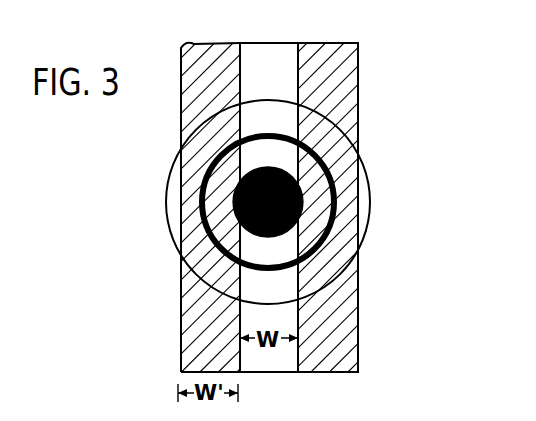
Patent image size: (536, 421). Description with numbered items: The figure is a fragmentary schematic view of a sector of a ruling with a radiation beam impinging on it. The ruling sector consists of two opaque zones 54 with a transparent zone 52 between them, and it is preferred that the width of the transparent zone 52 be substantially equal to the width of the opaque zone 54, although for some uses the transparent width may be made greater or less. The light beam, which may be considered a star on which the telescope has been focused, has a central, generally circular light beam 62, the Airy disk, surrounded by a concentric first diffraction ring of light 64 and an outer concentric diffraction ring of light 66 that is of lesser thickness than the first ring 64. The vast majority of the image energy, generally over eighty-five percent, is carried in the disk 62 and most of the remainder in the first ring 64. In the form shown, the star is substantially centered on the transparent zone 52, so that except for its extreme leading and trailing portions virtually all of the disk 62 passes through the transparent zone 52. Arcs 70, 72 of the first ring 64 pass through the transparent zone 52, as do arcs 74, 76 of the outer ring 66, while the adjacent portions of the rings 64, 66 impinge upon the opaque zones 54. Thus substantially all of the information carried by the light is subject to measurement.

The transparent zone 52 is at (283, 52).
The opaque zones 54 is at (224, 52).
The central light beam 62 is at (284, 172).
The first diffraction ring of light 64 is at (337, 203).
The outer concentric diffraction ring of light 66 is at (362, 233).
The arc 70 is at (282, 265).
The arc 72 is at (282, 135).
The arc 74 is at (278, 99).
The arc 76 is at (284, 301).